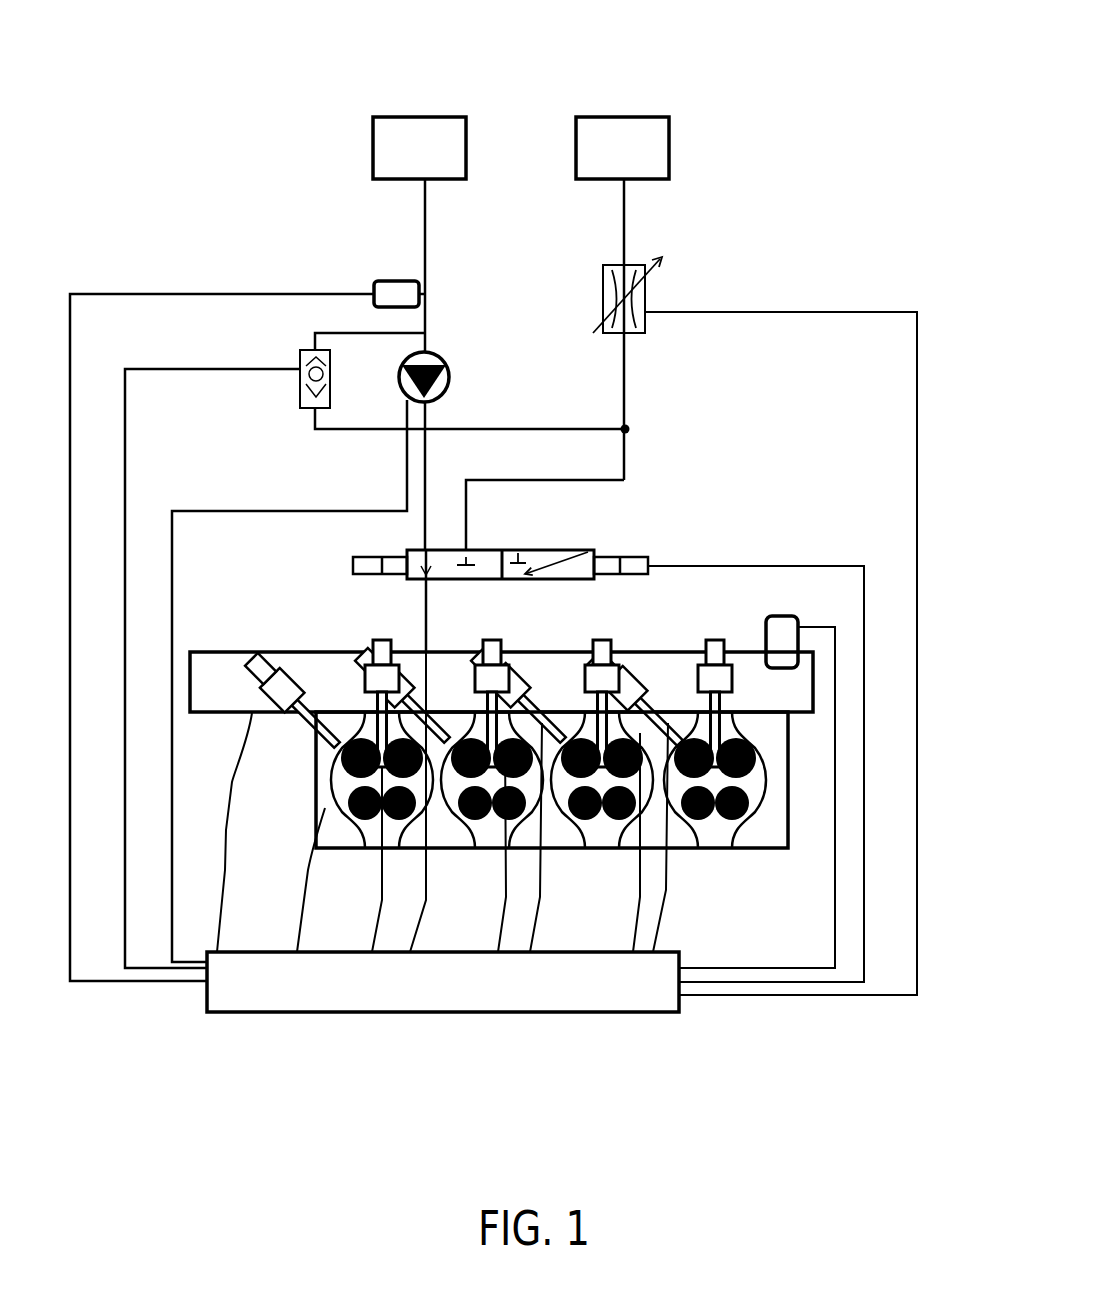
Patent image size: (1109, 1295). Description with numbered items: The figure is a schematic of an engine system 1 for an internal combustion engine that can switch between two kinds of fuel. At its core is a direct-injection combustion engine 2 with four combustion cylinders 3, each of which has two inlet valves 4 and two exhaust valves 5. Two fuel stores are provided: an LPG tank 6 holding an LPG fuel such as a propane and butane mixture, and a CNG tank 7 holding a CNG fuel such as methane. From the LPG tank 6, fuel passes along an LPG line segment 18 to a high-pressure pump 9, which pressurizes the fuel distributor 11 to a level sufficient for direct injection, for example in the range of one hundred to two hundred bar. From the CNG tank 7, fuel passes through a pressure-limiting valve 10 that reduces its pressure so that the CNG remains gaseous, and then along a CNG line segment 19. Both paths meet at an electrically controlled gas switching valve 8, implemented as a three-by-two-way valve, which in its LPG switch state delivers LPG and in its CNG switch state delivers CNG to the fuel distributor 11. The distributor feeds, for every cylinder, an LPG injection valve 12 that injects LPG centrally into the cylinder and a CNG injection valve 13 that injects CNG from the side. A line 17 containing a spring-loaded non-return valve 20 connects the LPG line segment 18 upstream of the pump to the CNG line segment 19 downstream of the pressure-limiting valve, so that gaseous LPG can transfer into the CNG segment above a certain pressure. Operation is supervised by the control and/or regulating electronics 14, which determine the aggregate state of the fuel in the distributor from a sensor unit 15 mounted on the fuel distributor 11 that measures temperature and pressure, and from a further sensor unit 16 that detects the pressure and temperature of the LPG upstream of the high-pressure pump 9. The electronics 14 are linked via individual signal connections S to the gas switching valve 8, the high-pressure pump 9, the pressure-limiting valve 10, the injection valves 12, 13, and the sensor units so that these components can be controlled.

The engine system 1 is at (143, 108).
The combustion engine 2 is at (680, 848).
The combustion cylinders 3 is at (755, 797).
The inlet valves 4 is at (757, 745).
The exhaust valves 5 is at (740, 792).
The LPG tank 6 is at (436, 153).
The CNG tank 7 is at (623, 142).
The gas switching valve 8 is at (582, 558).
The high-pressure pump 9 is at (447, 380).
The pressure-limiting valve 10 is at (647, 322).
The fuel distributor 11 is at (315, 678).
The LPG injection valve 12 is at (377, 657).
The CNG injection valve 13 is at (253, 662).
The control and/or regulating electronics 14 is at (520, 987).
The sensor unit 15 is at (783, 625).
The further sensor unit 16 is at (395, 295).
The line 17 is at (347, 430).
The LPG line segment 18 is at (425, 203).
The CNG line segment 19 is at (628, 455).
The spring-loaded non-return valve 20 is at (300, 382).
The signal connections S is at (780, 997).